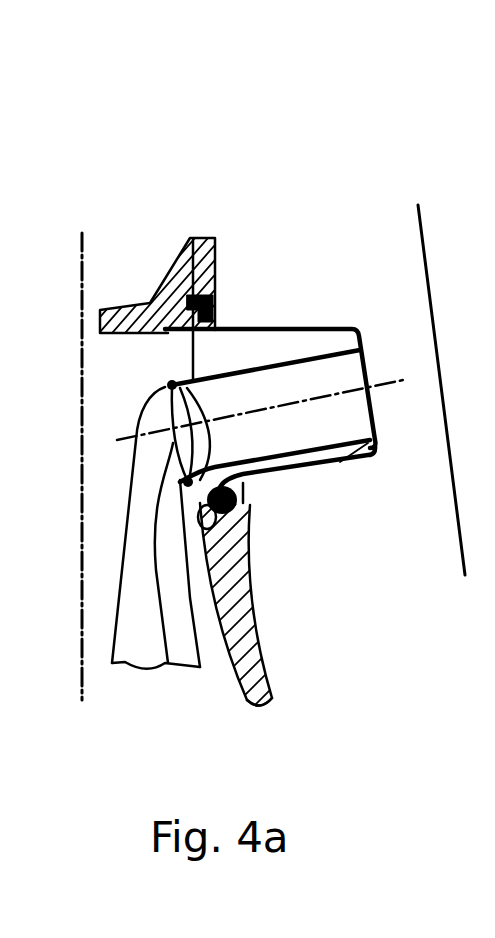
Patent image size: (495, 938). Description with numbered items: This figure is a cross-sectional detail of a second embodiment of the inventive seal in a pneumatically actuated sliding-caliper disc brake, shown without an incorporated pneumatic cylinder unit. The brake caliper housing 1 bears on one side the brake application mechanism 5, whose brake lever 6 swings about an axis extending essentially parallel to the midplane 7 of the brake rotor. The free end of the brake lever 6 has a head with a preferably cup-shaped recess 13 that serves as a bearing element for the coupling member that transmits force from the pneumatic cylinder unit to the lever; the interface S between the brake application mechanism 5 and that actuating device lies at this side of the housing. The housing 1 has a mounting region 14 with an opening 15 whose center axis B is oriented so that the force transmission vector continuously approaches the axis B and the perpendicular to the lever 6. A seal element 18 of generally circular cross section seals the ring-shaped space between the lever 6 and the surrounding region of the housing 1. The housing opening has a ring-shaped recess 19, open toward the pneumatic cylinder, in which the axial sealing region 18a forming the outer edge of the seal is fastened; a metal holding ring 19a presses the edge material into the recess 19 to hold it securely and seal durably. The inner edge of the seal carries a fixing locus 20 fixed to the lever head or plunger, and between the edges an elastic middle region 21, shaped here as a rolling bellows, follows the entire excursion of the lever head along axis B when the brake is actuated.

The brake caliper housing 1 is at (113, 303).
The brake application mechanism 5 is at (137, 353).
The brake lever 6 is at (133, 623).
The midplane of the brake rotor 7 is at (75, 236).
The recess in brake lever head 13 is at (168, 663).
The mounting region on caliper housing 14 is at (217, 263).
The opening in caliper housing 15 is at (180, 357).
The seal element 18 is at (272, 322).
The axial sealing region 18a is at (238, 502).
The recess 19 is at (243, 572).
The holding ring for seal element 19a is at (192, 240).
The fixing locus 20 is at (170, 380).
The middle region of seal element 21 is at (357, 446).
The center axis of opening B is at (386, 386).
The interface between brake application mechanism and actuating device S is at (427, 253).